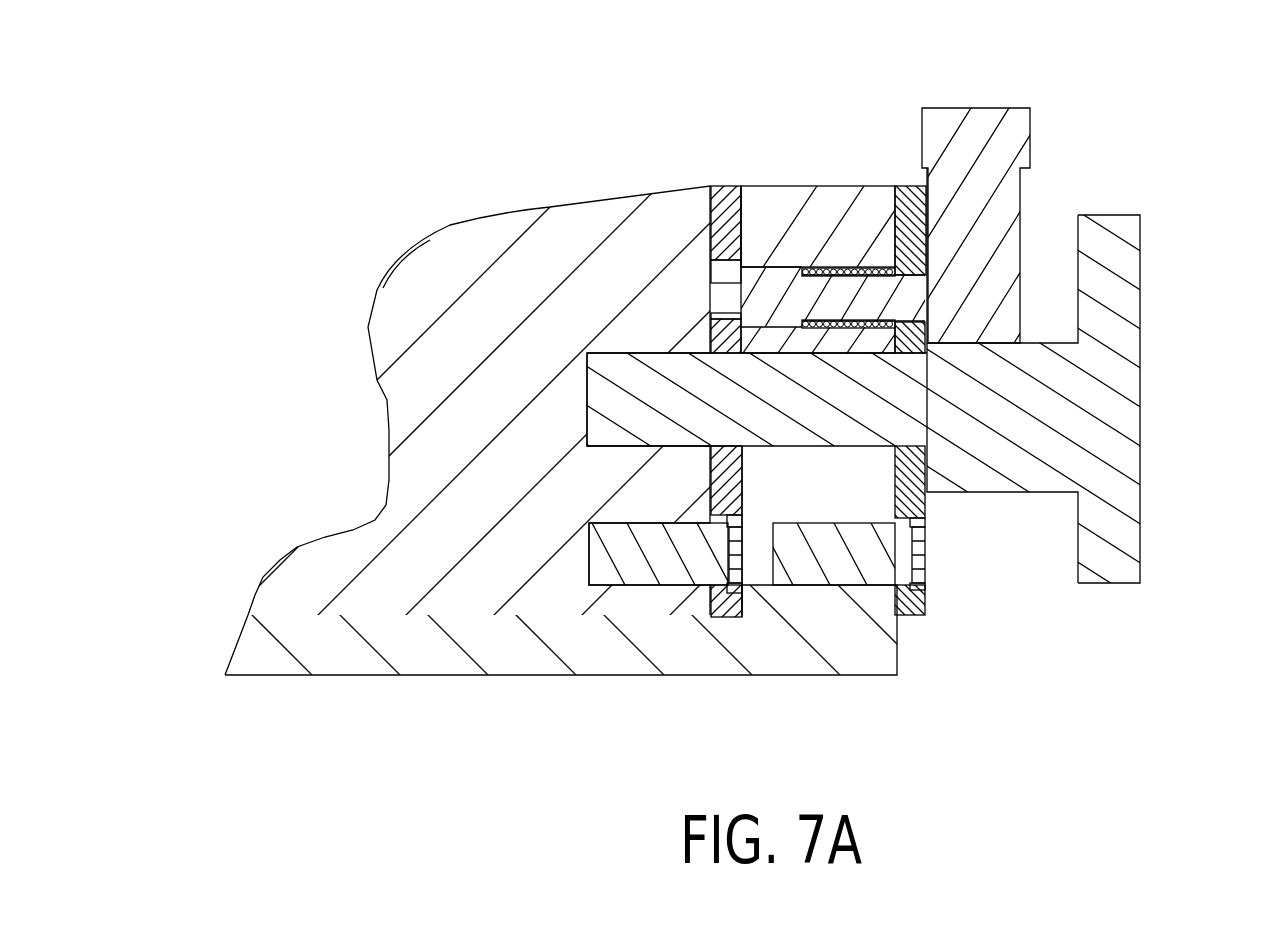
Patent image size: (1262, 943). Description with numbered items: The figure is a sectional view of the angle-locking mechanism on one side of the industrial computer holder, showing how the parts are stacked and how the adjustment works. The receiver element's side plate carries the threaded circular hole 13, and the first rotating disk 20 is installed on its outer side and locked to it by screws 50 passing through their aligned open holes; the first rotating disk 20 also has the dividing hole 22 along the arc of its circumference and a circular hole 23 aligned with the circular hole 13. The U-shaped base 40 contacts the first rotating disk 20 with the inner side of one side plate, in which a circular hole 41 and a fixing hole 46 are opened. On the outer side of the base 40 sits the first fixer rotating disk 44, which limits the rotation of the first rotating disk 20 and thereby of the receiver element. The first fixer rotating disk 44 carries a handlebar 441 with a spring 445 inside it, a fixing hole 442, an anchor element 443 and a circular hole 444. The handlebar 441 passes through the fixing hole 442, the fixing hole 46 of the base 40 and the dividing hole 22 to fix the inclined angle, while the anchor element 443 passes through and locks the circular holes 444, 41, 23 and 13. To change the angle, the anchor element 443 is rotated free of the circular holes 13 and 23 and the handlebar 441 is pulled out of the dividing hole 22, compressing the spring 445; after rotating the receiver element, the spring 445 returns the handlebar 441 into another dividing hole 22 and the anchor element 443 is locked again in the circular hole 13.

The circular hole 13 is at (602, 353).
The first rotating disk 20 is at (724, 588).
The dividing hole 22 is at (723, 270).
The circular hole 23 is at (710, 450).
The base 40 is at (573, 640).
The circular hole 41 is at (795, 448).
The first fixer rotating disk 44 is at (923, 617).
The fixing hole 46 is at (775, 262).
The screws 50 is at (853, 575).
The handlebar 441 is at (985, 118).
The fixing hole 442 is at (897, 255).
The anchor element 443 is at (1110, 282).
The circular hole 444 is at (925, 490).
The spring 445 is at (813, 267).